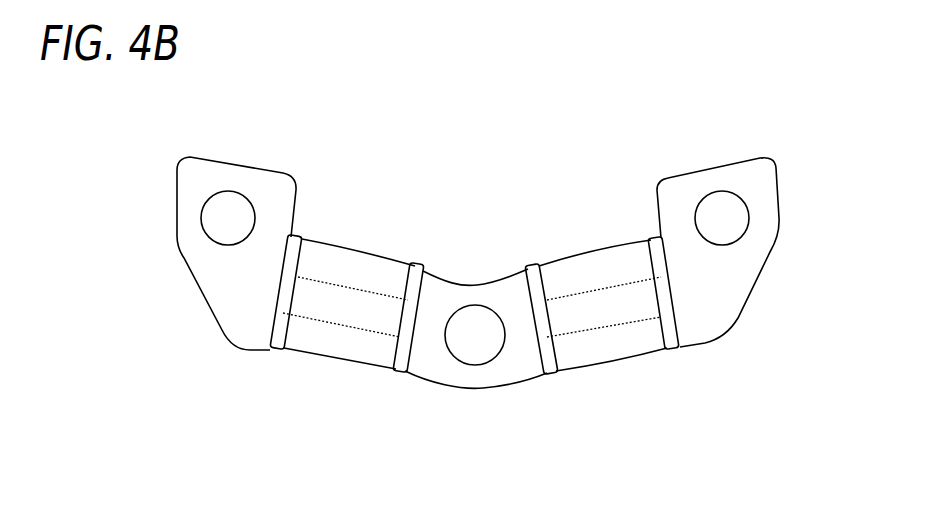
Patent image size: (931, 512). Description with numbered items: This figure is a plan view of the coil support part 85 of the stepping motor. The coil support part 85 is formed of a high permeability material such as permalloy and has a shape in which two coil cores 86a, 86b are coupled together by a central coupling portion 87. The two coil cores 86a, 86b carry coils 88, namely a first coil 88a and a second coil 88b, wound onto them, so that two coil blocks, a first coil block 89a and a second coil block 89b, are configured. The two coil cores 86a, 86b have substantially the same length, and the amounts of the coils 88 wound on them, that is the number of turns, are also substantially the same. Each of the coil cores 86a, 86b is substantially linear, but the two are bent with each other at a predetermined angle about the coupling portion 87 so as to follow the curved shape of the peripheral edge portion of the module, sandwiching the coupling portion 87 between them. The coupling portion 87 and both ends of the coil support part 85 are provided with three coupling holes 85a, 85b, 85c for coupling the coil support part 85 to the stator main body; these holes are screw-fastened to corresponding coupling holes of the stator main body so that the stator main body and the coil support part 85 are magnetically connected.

The coil support part 85 is at (565, 213).
The coupling hole 85a is at (475, 358).
The coupling hole 85b is at (230, 237).
The coupling hole 85c is at (727, 233).
The coil core 86a is at (367, 330).
The coil core 86b is at (583, 323).
The coupling portion 87 is at (484, 378).
The coils 88 is at (486, 369).
The first coil 88a is at (307, 363).
The second coil 88b is at (659, 370).
The first coil block 89a is at (345, 375).
The second coil block 89b is at (634, 370).